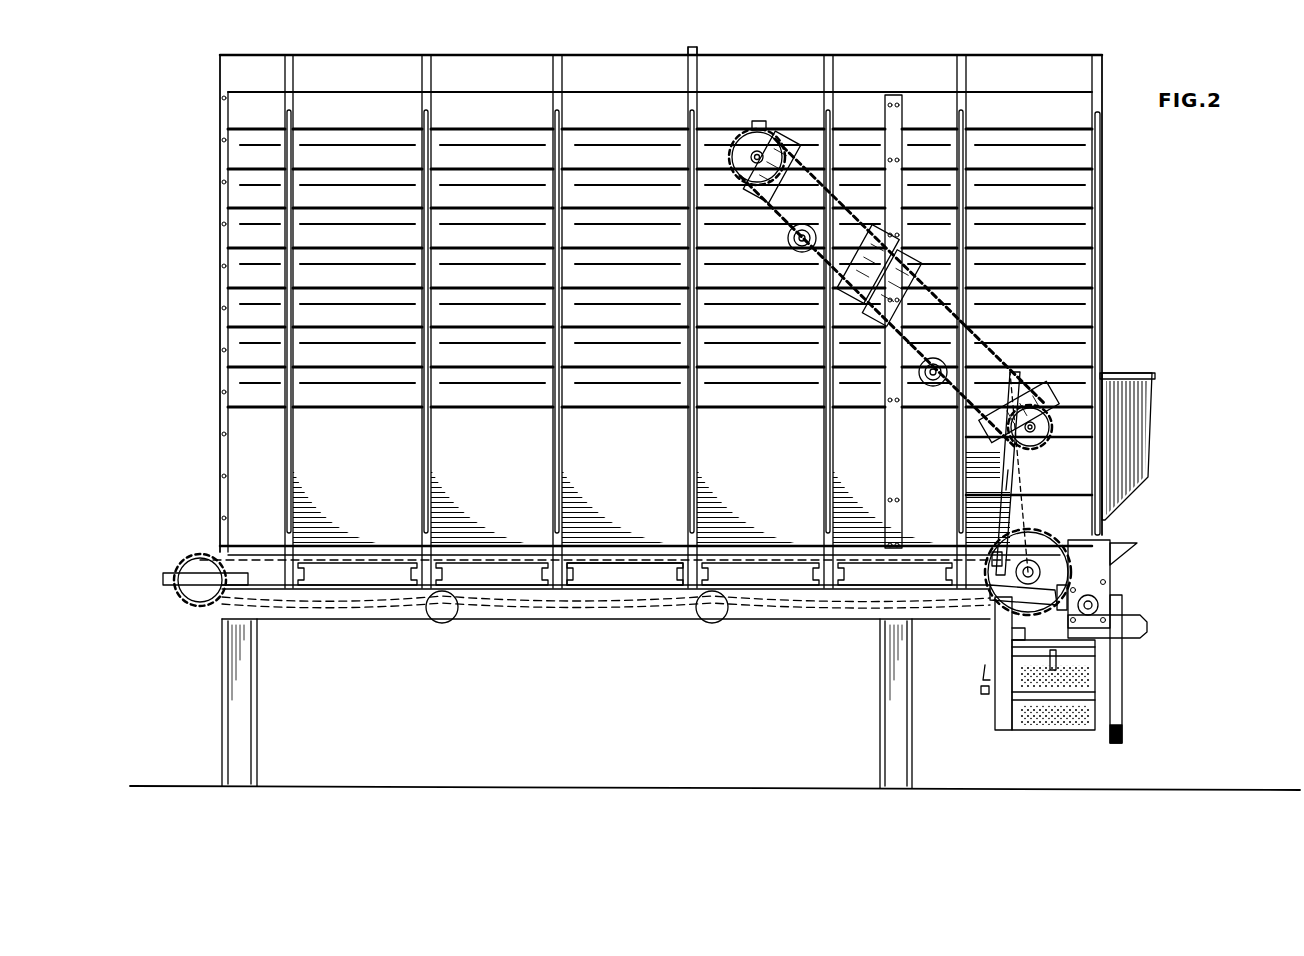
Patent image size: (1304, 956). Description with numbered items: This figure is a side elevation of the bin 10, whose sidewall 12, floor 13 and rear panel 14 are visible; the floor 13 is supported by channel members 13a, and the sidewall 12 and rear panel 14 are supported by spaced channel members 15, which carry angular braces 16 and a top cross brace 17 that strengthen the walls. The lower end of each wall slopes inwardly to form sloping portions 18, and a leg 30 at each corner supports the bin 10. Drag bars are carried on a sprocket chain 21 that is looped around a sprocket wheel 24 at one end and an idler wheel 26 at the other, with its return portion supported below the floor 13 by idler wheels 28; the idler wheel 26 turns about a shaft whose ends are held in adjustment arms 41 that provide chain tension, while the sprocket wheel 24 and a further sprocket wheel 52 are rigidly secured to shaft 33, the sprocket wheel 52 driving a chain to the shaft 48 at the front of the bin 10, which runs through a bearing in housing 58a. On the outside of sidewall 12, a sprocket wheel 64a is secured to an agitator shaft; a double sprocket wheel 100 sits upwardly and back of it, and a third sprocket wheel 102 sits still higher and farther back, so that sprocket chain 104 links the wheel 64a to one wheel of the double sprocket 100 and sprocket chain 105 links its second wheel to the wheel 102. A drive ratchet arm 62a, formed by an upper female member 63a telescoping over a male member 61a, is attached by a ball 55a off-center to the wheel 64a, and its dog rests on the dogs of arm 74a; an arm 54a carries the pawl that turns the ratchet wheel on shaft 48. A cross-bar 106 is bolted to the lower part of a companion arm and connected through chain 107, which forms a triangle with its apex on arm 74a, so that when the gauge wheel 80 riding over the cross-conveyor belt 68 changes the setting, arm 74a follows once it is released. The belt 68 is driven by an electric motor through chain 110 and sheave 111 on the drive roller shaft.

The bin 10 is at (200, 134).
The sidewall 12 is at (613, 78).
The floor 13 is at (612, 565).
The channel members 13a is at (548, 575).
The rear panel 14 is at (220, 292).
The channel members 15 is at (425, 78).
The angular braces 16 is at (425, 438).
The top cross brace 17 is at (700, 47).
The sloping portions 18 is at (770, 482).
The sprocket chain 21 is at (195, 565).
The sprocket wheel 24 is at (1033, 552).
The idler wheel 26 is at (198, 598).
The idler wheels 28 is at (442, 624).
The leg 30 is at (258, 685).
The shaft 33 is at (1040, 573).
The adjustment arms 41 is at (165, 578).
The shaft 48 is at (1090, 603).
The sprocket wheel 52 is at (1089, 584).
The arm 54a is at (1000, 595).
The ball 55a is at (1012, 385).
The housing 58a is at (1110, 565).
The male member 61a is at (992, 558).
The drive ratchet arm 62a is at (996, 479).
The upper female member 63a is at (1012, 462).
The sprocket wheel 64a is at (1040, 432).
The cross-conveyor belt 68 is at (984, 714).
The arm 74a is at (1010, 634).
The gauge wheel 80 is at (1056, 660).
The double sprocket wheel 100 is at (902, 262).
The third sprocket wheel 102 is at (752, 136).
The sprocket chain 104 is at (985, 345).
The sprocket chain 105 is at (840, 200).
The cross-bar 106 is at (981, 690).
The chain 107 is at (983, 672).
The chain 110 is at (1130, 650).
The sheave 111 is at (1122, 703).